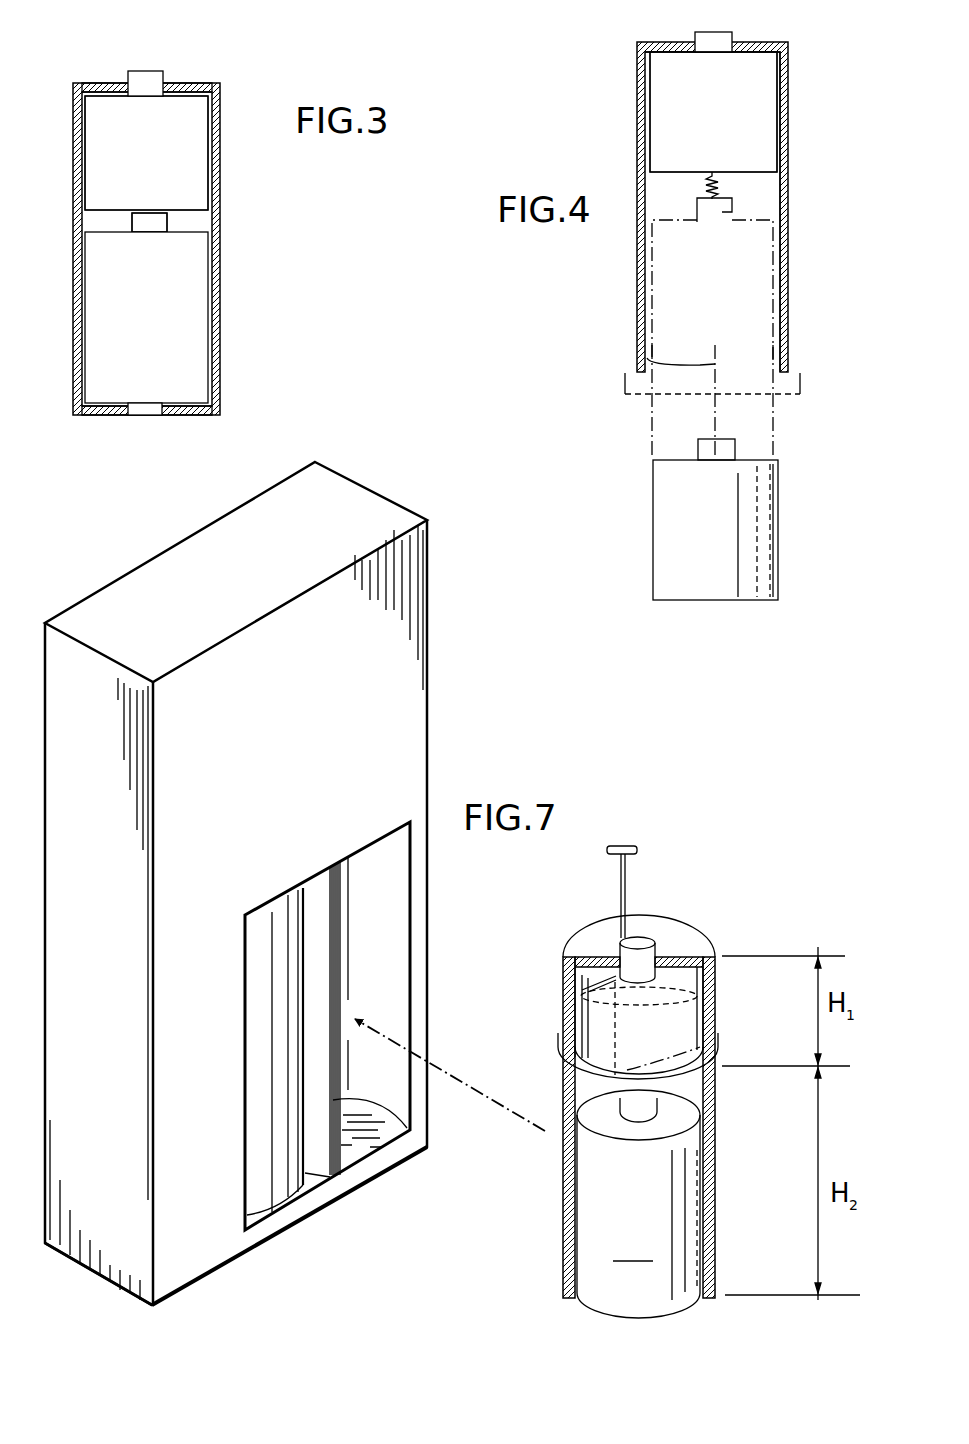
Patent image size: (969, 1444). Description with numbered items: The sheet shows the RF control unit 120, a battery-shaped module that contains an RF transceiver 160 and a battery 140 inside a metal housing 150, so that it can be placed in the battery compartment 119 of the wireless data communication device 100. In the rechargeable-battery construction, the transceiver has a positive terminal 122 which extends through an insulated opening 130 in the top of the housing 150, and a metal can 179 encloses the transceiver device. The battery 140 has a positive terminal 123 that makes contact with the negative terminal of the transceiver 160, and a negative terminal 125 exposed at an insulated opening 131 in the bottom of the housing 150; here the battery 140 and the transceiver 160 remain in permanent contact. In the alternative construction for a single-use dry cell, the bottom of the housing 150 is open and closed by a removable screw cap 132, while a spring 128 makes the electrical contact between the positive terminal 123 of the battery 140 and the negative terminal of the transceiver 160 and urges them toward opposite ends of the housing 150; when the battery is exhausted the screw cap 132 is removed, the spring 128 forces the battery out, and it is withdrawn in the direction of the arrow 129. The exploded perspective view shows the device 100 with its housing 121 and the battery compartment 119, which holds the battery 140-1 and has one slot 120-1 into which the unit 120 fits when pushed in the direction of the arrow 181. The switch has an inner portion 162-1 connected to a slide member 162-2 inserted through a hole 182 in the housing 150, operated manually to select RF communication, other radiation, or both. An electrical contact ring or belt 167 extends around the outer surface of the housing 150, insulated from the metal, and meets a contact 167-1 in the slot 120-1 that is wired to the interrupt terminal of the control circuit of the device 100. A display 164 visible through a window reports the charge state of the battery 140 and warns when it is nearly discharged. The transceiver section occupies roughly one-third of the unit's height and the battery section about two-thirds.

In FIG. 7, the wireless data communication device 100 is at (460, 600).
In FIG. 7, the battery compartment 119 is at (378, 832).
In FIG. 3, the RF control unit 120 is at (55, 323).
In FIG. 4, the RF control unit 120 is at (630, 126).
In FIG. 7, the RF control unit 120 is at (553, 1214).
In FIG. 7, the slot of the battery compartment 120-1 is at (355, 1143).
In FIG. 7, the housing of the device 121 is at (428, 680).
In FIG. 3, the positive terminal of the transceiver 122 is at (137, 71).
In FIG. 4, the positive terminal of the transceiver 122 is at (733, 32).
In FIG. 7, the positive terminal of the transceiver 122 is at (657, 940).
In FIG. 3, the positive terminal of the battery 123 is at (172, 222).
In FIG. 4, the positive terminal of the battery 123 is at (728, 210).
In FIG. 7, the positive terminal of the battery 123 is at (648, 1120).
In FIG. 3, the negative terminal of the battery 125 is at (143, 418).
In FIG. 4, the spring 128 is at (723, 185).
In FIG. 4, the arrow 129 is at (647, 360).
In FIG. 3, the insulated opening 130 is at (168, 82).
In FIG. 3, the insulated opening 131 is at (157, 416).
In FIG. 4, the removable screw cap 132 is at (638, 397).
In FIG. 3, the battery 140 is at (185, 327).
In FIG. 4, the battery 140 is at (755, 310).
In FIG. 7, the battery 140 is at (638, 1204).
In FIG. 7, the battery 140-1 is at (278, 1178).
In FIG. 3, the housing 150 is at (216, 226).
In FIG. 4, the housing 150 is at (789, 273).
In FIG. 7, the housing 150 is at (565, 1265).
In FIG. 3, the RF transceiver 160 is at (187, 163).
In FIG. 4, the RF transceiver 160 is at (760, 82).
In FIG. 7, the RF transceiver 160 is at (587, 980).
In FIG. 7, the inner portion of the switch 162-1 is at (615, 980).
In FIG. 7, the slide member 162-2 is at (633, 847).
In FIG. 7, the display 164 is at (593, 1020).
In FIG. 7, the electrical contact ring or belt 167 is at (580, 1063).
In FIG. 7, the contact 167-1 is at (398, 908).
In FIG. 3, the metal can 179 is at (178, 182).
In FIG. 4, the metal can 179 is at (753, 132).
In FIG. 7, the arrow 181 is at (500, 1114).
In FIG. 7, the hole in the housing 182 is at (630, 933).